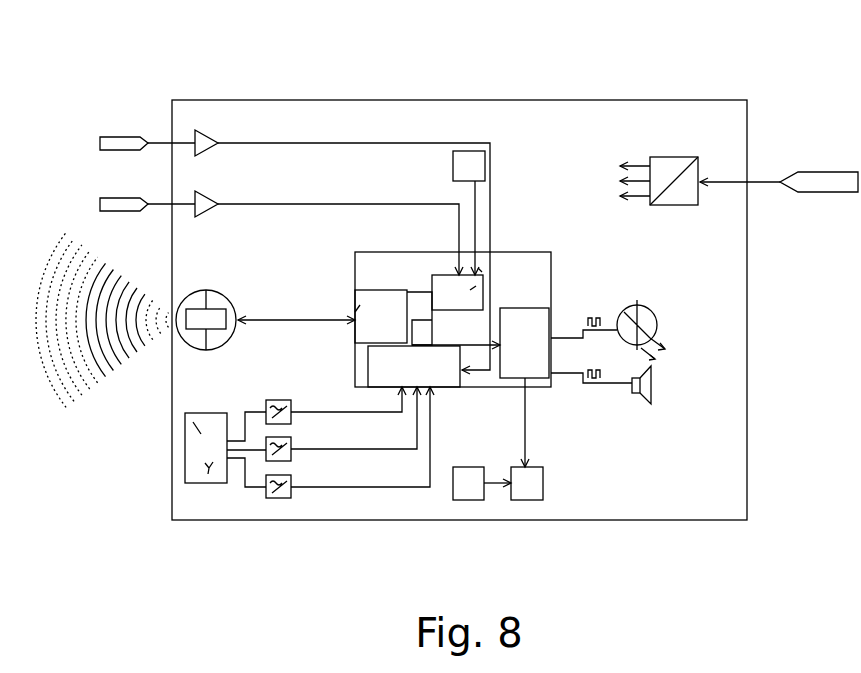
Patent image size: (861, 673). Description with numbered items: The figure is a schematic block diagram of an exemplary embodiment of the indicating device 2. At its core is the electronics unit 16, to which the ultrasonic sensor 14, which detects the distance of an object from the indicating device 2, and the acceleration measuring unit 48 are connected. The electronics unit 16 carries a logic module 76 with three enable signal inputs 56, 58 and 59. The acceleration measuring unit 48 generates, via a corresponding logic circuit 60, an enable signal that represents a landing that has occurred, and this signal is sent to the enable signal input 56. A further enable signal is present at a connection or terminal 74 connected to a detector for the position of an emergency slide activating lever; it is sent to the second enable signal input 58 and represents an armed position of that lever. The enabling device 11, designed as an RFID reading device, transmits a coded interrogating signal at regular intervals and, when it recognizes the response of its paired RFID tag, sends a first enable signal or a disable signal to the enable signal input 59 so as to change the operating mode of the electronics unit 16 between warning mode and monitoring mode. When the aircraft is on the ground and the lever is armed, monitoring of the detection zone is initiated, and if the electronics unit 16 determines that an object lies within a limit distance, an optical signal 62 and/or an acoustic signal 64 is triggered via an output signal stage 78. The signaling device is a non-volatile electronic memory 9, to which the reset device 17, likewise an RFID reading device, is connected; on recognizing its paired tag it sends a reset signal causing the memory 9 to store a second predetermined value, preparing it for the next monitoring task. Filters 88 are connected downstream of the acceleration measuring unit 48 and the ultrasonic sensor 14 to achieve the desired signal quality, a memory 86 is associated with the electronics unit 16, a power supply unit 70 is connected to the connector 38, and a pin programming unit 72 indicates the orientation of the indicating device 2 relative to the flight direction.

The indicating device 2 is at (565, 82).
The pin programming unit 72 is at (100, 146).
The connection or terminal 74 is at (100, 207).
The enabling device 11 is at (482, 162).
The ultrasonic sensor 14 is at (214, 292).
The electronics unit 16 is at (517, 263).
The enable signal input 56 is at (418, 283).
The memory 86 is at (352, 312).
The second enable signal input 58 is at (428, 290).
The enable signal input 59 is at (478, 268).
The logic module 76 is at (470, 290).
The logic circuit 60 is at (452, 390).
The output signal stage 78 is at (540, 380).
The optical signal 62 is at (621, 300).
The acoustic signal 64 is at (635, 400).
The power supply unit 70 is at (668, 172).
The connector 38 is at (798, 172).
The acceleration measuring unit 48 is at (185, 422).
The filters 88 is at (282, 395).
The reset device 17 is at (453, 497).
The non-volatile electronic memory 9 is at (543, 493).